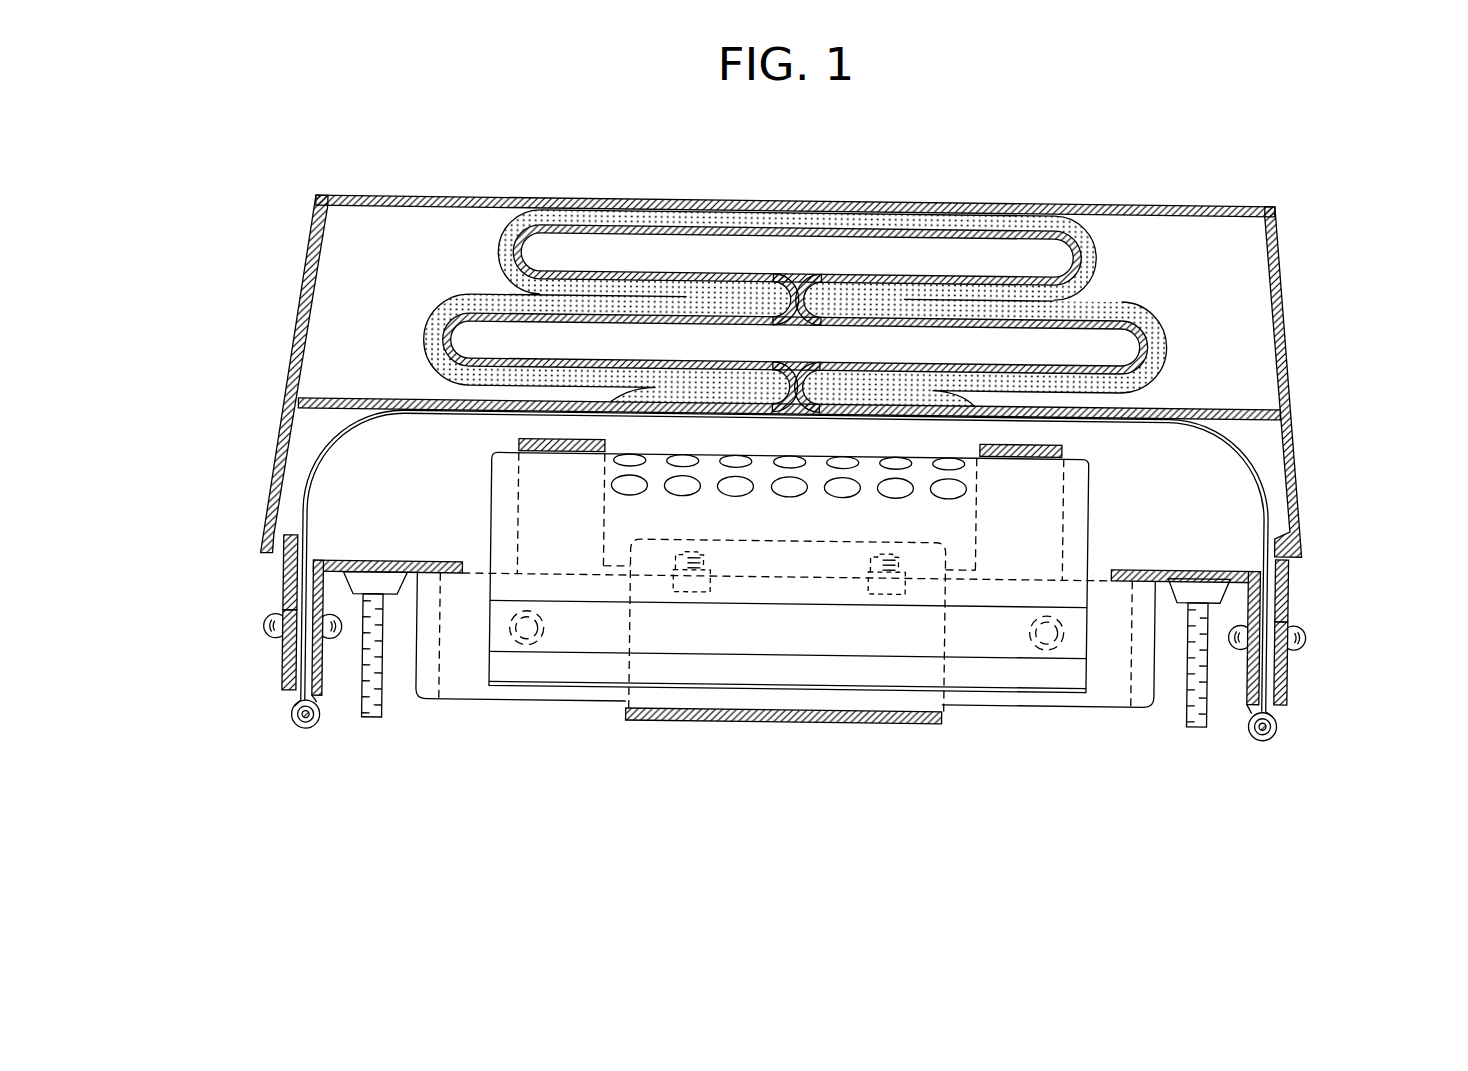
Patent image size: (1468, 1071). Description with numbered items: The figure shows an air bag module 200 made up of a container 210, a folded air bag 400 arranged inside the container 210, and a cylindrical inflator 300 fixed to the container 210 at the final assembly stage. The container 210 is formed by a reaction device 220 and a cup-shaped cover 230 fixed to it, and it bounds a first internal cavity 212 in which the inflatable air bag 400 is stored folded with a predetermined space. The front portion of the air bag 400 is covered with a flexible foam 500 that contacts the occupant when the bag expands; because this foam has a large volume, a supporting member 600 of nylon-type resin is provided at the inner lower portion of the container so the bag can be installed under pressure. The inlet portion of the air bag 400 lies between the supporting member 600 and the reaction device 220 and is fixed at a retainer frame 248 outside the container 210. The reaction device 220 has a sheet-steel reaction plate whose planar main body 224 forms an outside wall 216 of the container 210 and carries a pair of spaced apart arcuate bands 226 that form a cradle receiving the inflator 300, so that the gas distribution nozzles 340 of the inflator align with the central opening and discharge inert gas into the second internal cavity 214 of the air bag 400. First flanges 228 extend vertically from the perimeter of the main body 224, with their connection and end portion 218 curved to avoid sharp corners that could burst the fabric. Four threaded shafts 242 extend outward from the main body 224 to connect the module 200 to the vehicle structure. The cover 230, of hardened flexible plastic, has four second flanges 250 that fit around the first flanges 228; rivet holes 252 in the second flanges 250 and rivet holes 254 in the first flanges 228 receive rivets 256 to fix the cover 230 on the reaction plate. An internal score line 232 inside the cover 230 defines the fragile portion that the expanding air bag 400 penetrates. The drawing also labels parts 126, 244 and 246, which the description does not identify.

The air bag module 200 is at (1300, 210).
The container 210 is at (1325, 547).
The first internal cavity 212 is at (1250, 285).
The second internal cavity 214 is at (372, 480).
The outside wall 216 is at (405, 575).
The end portion 218 is at (335, 712).
The reaction device 220 is at (1178, 568).
The planar main body 224 is at (405, 562).
The arcuate band 226 is at (530, 442).
The spacer block 126 is at (1023, 443).
The first flanges 228 is at (323, 670).
The cover 230 is at (1304, 459).
The internal score line 232 is at (900, 203).
The threaded shafts 242 is at (373, 720).
The pin 244 is at (303, 727).
The bushing 246 is at (298, 720).
The retainer frame 248 is at (288, 717).
The second flanges 250 is at (287, 588).
The rivet holes 252 is at (287, 655).
The rivet holes 254 is at (527, 645).
The rivets 256 is at (268, 632).
The inflator 300 is at (992, 670).
The gas distribution nozzles 340 is at (752, 464).
The air bag 400 is at (1087, 260).
The flexible foam 500 is at (967, 222).
The supporting member 600 is at (1235, 400).